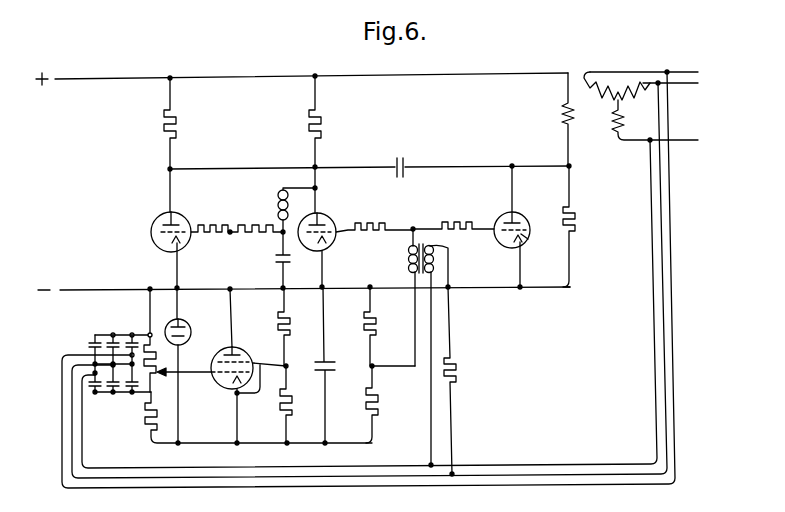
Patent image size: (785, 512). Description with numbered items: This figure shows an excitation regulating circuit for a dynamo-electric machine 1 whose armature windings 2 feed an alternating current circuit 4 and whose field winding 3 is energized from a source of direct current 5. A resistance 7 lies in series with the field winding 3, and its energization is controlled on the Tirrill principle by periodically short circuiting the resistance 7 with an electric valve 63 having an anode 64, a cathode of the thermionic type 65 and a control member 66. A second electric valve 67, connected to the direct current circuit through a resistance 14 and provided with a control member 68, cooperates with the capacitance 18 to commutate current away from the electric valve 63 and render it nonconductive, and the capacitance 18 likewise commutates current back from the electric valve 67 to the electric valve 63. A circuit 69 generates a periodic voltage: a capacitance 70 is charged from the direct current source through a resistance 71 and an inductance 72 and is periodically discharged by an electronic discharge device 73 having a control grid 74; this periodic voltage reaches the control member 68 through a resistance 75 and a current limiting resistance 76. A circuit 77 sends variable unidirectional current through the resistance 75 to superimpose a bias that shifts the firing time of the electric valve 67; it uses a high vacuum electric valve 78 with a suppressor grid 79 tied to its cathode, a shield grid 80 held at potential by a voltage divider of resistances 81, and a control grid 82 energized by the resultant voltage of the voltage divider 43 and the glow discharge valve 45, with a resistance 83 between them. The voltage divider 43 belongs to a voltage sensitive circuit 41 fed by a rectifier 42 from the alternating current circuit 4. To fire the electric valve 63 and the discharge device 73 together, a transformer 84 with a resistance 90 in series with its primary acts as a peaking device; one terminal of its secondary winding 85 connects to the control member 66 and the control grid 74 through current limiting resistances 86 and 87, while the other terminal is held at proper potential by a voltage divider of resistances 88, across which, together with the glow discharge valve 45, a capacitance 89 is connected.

The dynamo-electric machine 1 is at (610, 103).
The armature windings 2 is at (626, 118).
The field winding 3 is at (560, 113).
The alternating current circuit 4 is at (690, 134).
The source of direct current 5 is at (102, 290).
The resistance 7 is at (578, 218).
The resistance 14 is at (177, 122).
The capacitance 18 is at (403, 157).
The voltage sensitive circuit 41 is at (160, 362).
The rectifier 42 is at (116, 374).
The voltage divider 43 is at (156, 384).
The glow discharge valve 45 is at (188, 323).
The electric valve 63 is at (523, 218).
The anode 64 is at (507, 220).
The cathode of the thermionic type 65 is at (504, 238).
The control member 66 is at (535, 240).
The electric valve 67 is at (155, 221).
The control member 68 is at (157, 241).
The circuit 69 is at (311, 271).
The capacitance 70 is at (276, 259).
The resistance 71 is at (322, 125).
The inductance 72 is at (276, 194).
The electronic discharge device 73 is at (327, 213).
The control grid 74 is at (328, 241).
The resistance 75 is at (254, 228).
The current limiting resistance 76 is at (216, 228).
The circuit 77 is at (258, 349).
The electric valve 78 is at (223, 345).
The suppressor grid 79 is at (222, 360).
The shield grid 80 is at (215, 363).
The resistances 81 is at (297, 400).
The control grid 82 is at (227, 374).
The resistance 83 is at (148, 412).
The transformer 84 is at (418, 246).
The secondary winding 85 is at (410, 254).
The current limiting resistance 86 is at (452, 225).
The current limiting resistance 87 is at (376, 225).
The resistances 88 is at (386, 397).
The capacitance 89 is at (332, 363).
The resistance 90 is at (460, 362).